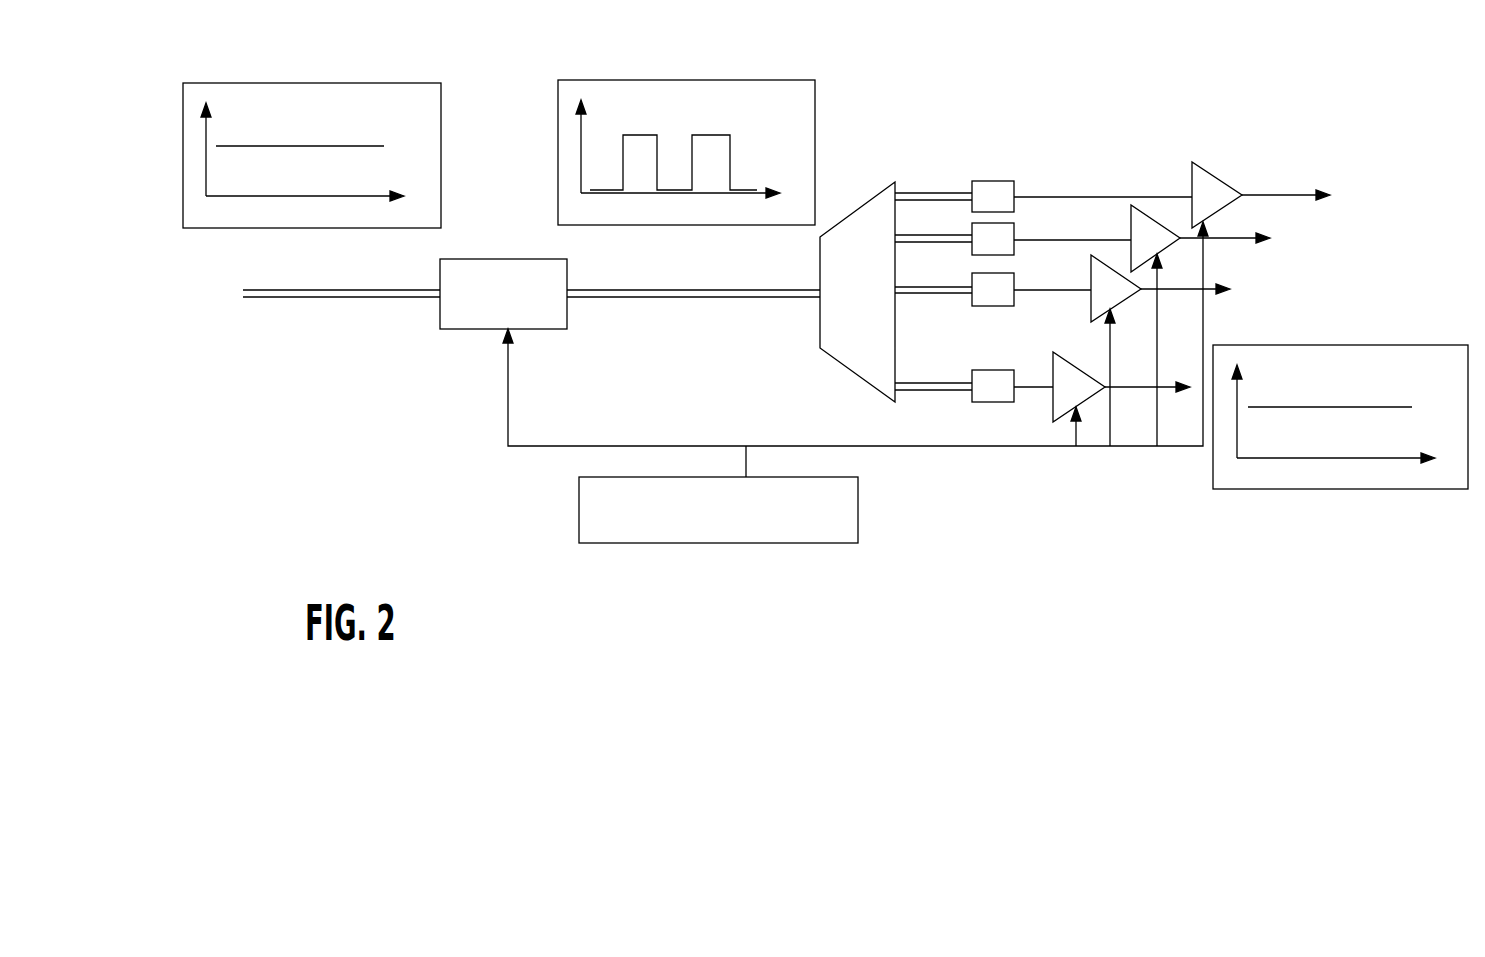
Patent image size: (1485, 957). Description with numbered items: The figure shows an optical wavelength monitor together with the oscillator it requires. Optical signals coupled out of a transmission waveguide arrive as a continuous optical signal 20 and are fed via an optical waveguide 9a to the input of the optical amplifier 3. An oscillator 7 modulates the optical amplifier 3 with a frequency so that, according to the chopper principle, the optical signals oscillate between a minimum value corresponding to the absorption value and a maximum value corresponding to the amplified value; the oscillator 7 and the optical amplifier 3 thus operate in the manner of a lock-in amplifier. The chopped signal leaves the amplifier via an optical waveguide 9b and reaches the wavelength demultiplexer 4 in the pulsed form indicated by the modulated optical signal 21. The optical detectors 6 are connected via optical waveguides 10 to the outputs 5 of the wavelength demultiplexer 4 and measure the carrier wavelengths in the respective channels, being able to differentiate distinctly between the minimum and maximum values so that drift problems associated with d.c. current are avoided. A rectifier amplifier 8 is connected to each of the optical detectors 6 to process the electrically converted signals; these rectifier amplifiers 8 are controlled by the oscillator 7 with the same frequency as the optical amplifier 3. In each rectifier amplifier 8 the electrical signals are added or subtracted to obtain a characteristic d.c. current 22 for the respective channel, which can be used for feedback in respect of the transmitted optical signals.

The continuous optical signal 20 is at (300, 83).
The modulated optical signal 21 is at (638, 80).
The characteristic d.c. current 22 is at (1345, 345).
The optical waveguide 9a is at (320, 297).
The optical waveguide 9b is at (716, 297).
The optical amplifier 3 is at (492, 318).
The wavelength demultiplexer 4 is at (853, 353).
The outputs 5 is at (897, 297).
The optical detectors 6 is at (985, 306).
The optical waveguides 10 is at (952, 237).
The rectifier amplifier 8 is at (1150, 222).
The oscillator 7 is at (693, 532).